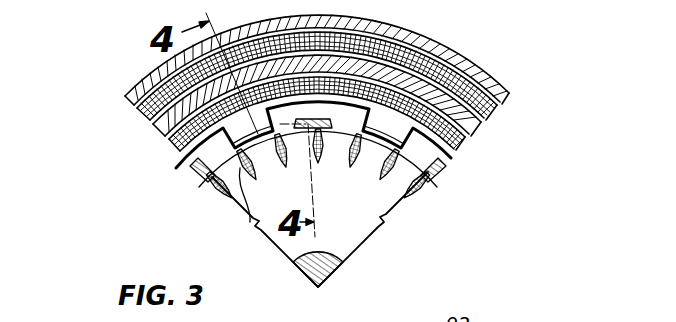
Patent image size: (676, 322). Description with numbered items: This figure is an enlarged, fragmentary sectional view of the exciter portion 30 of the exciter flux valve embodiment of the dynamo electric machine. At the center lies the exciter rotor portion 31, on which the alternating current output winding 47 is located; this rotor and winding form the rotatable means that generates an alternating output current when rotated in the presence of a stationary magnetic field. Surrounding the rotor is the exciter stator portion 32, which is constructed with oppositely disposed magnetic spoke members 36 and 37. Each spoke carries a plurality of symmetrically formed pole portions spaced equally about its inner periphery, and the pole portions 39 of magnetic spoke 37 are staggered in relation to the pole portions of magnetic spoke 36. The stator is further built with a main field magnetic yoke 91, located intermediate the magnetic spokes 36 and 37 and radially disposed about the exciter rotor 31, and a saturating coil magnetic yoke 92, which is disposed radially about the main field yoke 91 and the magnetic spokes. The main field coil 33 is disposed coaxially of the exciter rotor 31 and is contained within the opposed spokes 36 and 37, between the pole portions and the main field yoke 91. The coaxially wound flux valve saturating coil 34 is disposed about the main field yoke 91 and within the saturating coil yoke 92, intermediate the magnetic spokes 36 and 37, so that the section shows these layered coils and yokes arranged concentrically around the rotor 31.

The exciter portion 30 is at (474, 67).
The rotor portion 31 is at (364, 243).
The stator portion 32 is at (137, 81).
The main field coil 33 is at (178, 146).
The flux valve saturating coil 34 is at (146, 109).
The magnetic spoke member 36 is at (176, 168).
The magnetic spoke member 37 is at (200, 170).
The pole portions 39 is at (438, 165).
The alternating current output winding 47 is at (250, 222).
The main field magnetic yoke 91 is at (468, 126).
The saturating coil magnetic yoke 92 is at (504, 97).